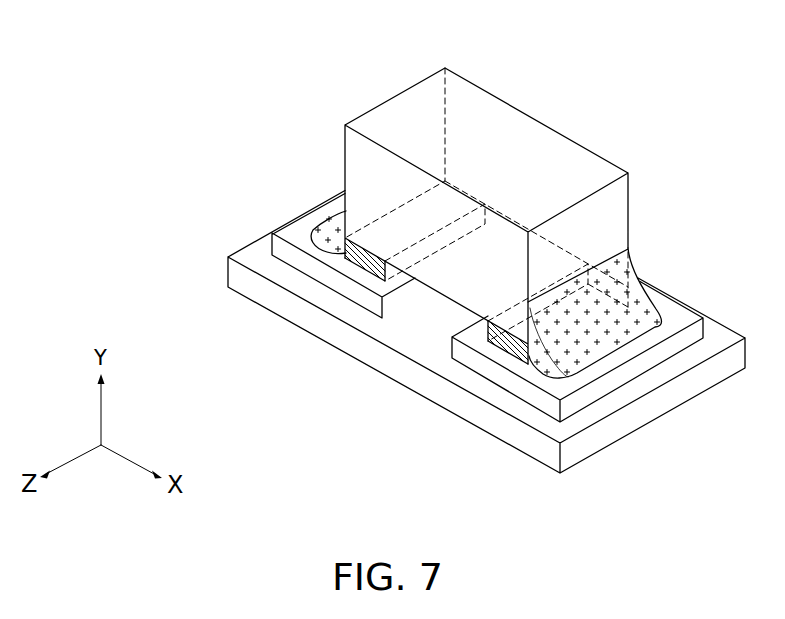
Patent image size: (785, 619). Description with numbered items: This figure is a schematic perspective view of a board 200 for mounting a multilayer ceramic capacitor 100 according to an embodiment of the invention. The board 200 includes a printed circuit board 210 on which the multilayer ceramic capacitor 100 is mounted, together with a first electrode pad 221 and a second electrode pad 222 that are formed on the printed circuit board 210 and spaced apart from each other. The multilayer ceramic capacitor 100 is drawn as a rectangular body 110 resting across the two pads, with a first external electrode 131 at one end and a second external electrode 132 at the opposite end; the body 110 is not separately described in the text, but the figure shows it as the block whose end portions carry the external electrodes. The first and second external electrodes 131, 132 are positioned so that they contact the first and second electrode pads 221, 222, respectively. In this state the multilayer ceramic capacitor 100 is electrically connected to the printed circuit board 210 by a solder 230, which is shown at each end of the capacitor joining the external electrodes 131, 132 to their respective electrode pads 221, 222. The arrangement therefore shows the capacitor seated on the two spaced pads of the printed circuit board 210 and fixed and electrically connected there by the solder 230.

The multilayer ceramic capacitor 100 is at (445, 249).
The component body 110 is at (470, 291).
The first external electrode 131 is at (378, 273).
The second external electrode 132 is at (505, 342).
The board for mounting the multilayer ceramic capacitor 200 is at (707, 46).
The printed circuit board 210 is at (503, 427).
The first electrode pad 221 is at (295, 233).
The second electrode pad 222 is at (582, 375).
The solder 230 is at (328, 247).